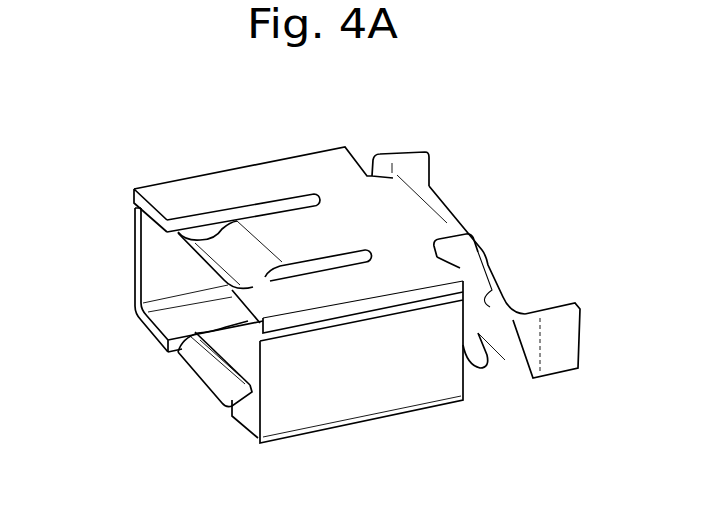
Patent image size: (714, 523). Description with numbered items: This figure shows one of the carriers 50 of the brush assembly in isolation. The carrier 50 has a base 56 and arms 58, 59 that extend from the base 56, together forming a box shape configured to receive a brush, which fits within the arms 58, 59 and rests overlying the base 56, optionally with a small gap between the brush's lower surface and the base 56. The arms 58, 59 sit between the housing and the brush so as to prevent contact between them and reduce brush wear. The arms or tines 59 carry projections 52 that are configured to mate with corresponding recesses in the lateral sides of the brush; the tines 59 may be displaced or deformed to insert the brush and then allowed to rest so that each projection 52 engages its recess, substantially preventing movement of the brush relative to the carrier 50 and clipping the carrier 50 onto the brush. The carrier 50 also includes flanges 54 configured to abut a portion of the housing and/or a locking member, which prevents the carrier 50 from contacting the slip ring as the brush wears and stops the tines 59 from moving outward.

The carrier 50 is at (230, 180).
The projection 52 is at (230, 245).
The flange 54 is at (404, 150).
The base 56 is at (490, 300).
The arm 58 is at (137, 263).
The arm or tine 59 is at (287, 227).